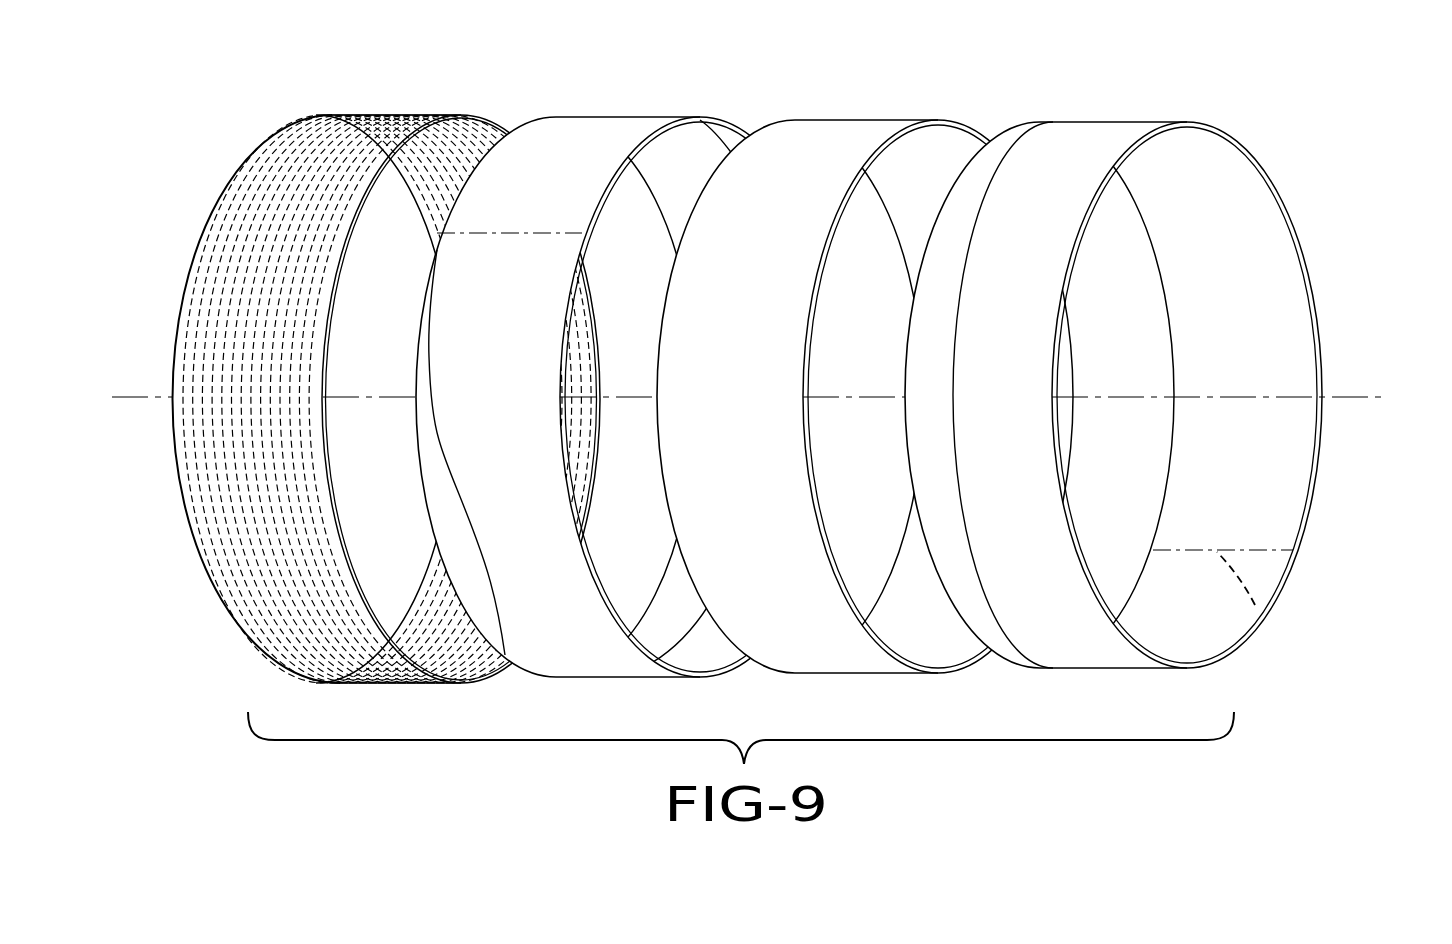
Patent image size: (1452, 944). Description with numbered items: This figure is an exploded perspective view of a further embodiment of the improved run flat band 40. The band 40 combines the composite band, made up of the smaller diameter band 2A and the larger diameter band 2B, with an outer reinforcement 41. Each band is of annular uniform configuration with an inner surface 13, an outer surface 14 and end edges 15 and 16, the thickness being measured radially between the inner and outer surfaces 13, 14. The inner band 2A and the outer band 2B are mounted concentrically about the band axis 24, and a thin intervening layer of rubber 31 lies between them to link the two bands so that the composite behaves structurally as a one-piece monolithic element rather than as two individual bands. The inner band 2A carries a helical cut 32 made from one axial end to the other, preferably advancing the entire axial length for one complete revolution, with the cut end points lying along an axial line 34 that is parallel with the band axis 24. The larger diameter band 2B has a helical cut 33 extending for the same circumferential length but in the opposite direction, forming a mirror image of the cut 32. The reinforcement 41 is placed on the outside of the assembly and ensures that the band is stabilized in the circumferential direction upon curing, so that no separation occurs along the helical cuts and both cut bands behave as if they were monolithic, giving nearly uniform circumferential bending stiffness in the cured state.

The outer reinforcement 41 is at (274, 135).
The larger diameter band 2B is at (560, 366).
The smaller diameter band 2A is at (1133, 369).
The inner surface 13 is at (683, 159).
The outer surface 14 is at (557, 128).
The end edge 15 is at (1265, 188).
The end edge 16 is at (420, 472).
The band axis 24 is at (1340, 403).
The intervening layer of rubber 31 is at (840, 130).
The helical cut 32 is at (1268, 247).
The helical cut 33 is at (450, 507).
The axial line 34 is at (1257, 608).
The run flat band 40 is at (927, 68).